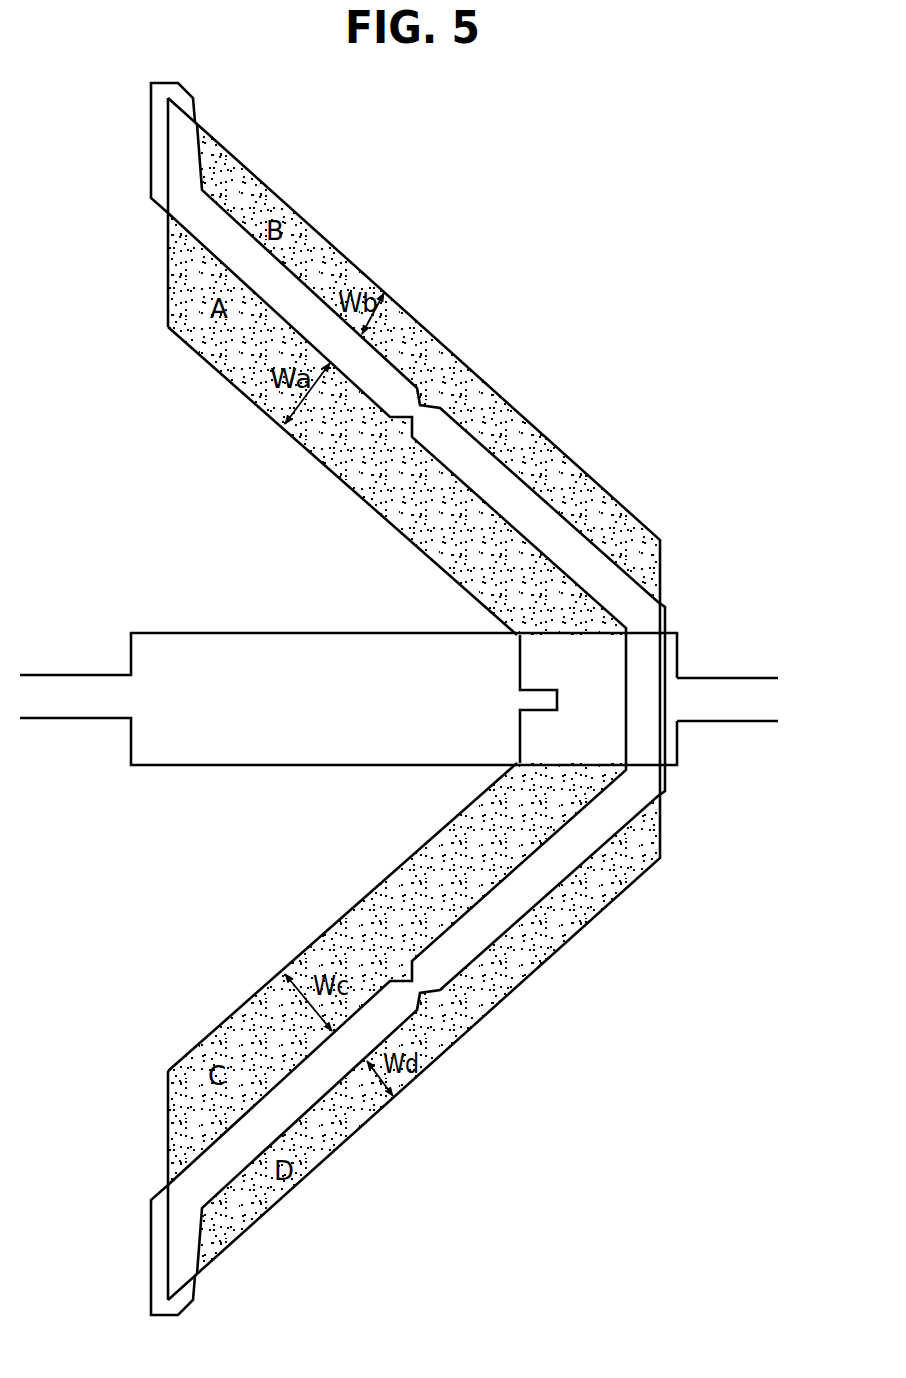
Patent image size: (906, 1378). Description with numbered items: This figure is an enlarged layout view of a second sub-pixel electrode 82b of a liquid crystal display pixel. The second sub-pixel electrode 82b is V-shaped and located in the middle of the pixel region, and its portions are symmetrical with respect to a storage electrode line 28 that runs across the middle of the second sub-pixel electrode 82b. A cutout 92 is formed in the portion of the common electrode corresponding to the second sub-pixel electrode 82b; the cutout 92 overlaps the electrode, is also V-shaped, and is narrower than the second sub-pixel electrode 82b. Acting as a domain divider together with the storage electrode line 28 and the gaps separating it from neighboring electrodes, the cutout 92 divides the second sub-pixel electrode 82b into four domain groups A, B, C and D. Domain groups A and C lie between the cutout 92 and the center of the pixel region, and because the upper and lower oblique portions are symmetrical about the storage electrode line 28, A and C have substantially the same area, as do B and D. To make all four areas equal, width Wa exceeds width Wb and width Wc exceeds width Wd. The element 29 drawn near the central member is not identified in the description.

The cutout 92 is at (218, 205).
The second sub-pixel electrode 82b is at (600, 487).
The storage electrode line 28 is at (747, 677).
The rotor / roller body 29 is at (131, 745).